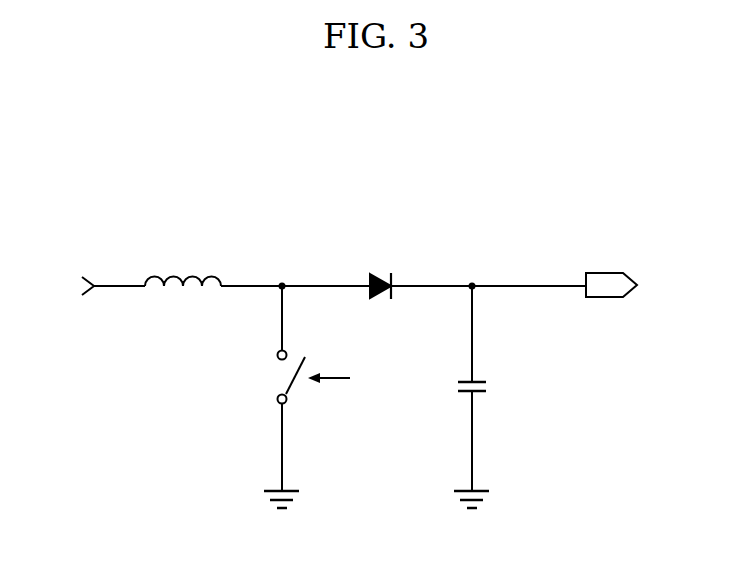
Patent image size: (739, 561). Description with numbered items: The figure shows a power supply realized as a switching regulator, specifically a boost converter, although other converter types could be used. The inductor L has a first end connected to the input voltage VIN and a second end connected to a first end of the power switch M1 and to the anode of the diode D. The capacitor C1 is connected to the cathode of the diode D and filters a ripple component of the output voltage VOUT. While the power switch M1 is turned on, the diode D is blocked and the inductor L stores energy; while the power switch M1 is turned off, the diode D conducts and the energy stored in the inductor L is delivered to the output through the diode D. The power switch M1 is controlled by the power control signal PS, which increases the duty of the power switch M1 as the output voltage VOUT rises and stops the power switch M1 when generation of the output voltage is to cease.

The input voltage VIN is at (61, 289).
The inductor L is at (183, 268).
The diode D is at (380, 273).
The output voltage VOUT is at (645, 287).
The power switch M1 is at (271, 388).
The power control signal PS is at (346, 381).
The capacitor C1 is at (489, 388).